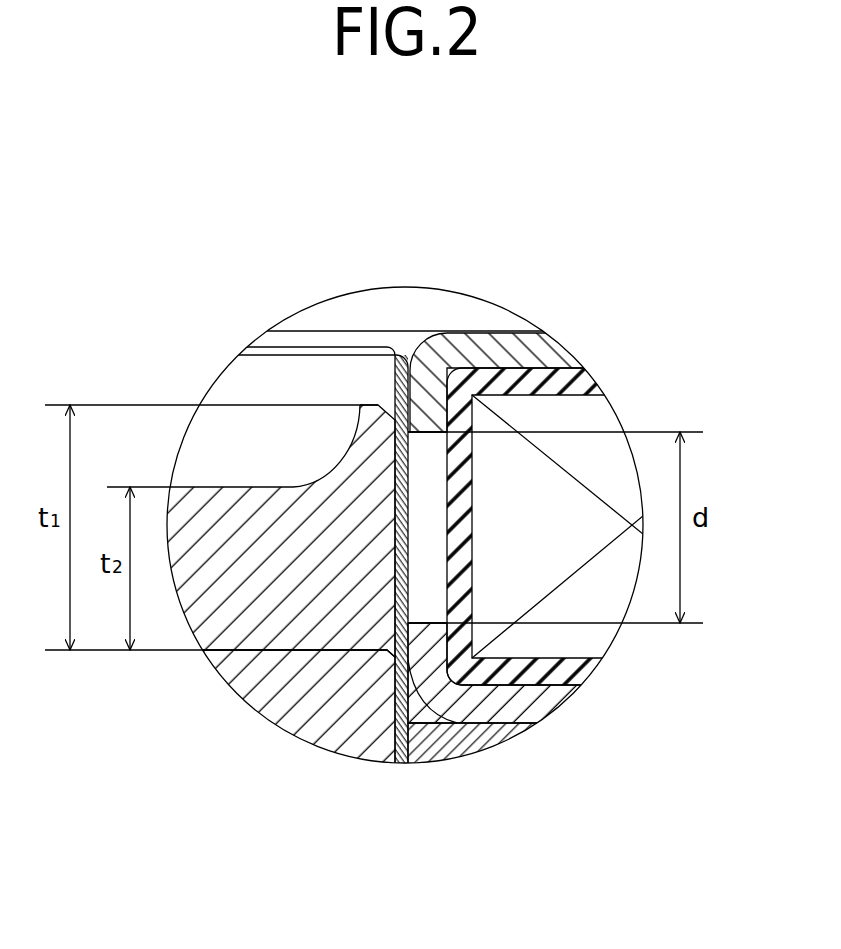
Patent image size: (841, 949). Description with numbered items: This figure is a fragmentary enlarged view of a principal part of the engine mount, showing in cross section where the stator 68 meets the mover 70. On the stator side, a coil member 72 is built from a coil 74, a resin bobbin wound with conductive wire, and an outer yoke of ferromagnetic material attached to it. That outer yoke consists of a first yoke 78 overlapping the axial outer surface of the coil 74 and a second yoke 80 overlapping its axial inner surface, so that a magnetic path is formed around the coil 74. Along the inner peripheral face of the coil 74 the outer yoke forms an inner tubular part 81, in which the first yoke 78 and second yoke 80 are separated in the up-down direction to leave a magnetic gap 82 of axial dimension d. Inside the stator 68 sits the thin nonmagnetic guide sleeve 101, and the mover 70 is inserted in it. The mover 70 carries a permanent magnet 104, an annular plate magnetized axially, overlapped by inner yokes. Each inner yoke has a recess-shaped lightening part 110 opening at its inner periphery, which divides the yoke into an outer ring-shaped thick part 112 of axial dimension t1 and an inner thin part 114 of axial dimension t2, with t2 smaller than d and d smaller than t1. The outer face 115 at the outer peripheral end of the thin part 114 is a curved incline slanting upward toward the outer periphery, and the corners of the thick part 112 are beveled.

The stator 68 is at (457, 320).
The mover 70 is at (310, 387).
The coil member 72 is at (413, 343).
The coil 74 is at (588, 414).
The first yoke 78 is at (505, 352).
The second yoke 80 is at (523, 705).
The inner tubular part 81 is at (427, 642).
The magnetic gap 82 is at (427, 585).
The guide sleeve 101 is at (407, 730).
The permanent magnet 104 is at (320, 717).
The lightening part 110 is at (292, 482).
The thick part 112 is at (373, 480).
The thin part 114 is at (200, 517).
The outer face 115 is at (358, 435).